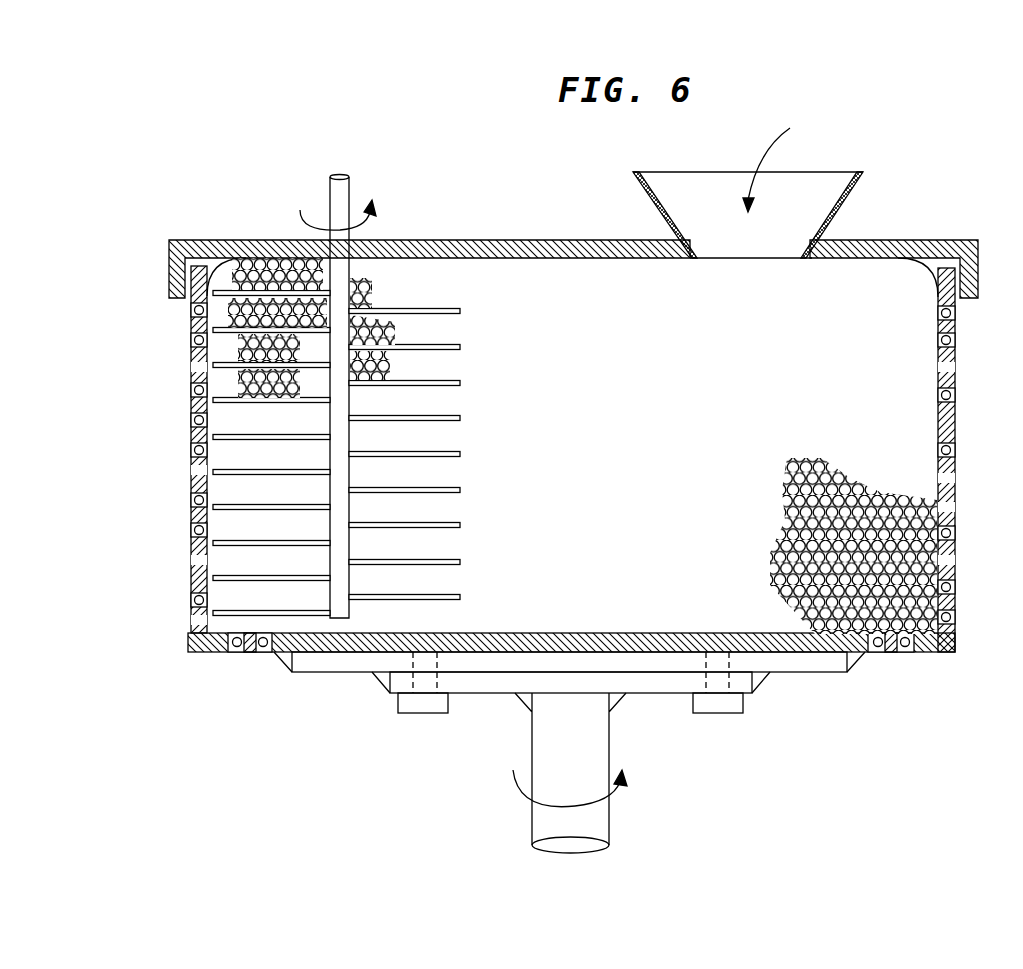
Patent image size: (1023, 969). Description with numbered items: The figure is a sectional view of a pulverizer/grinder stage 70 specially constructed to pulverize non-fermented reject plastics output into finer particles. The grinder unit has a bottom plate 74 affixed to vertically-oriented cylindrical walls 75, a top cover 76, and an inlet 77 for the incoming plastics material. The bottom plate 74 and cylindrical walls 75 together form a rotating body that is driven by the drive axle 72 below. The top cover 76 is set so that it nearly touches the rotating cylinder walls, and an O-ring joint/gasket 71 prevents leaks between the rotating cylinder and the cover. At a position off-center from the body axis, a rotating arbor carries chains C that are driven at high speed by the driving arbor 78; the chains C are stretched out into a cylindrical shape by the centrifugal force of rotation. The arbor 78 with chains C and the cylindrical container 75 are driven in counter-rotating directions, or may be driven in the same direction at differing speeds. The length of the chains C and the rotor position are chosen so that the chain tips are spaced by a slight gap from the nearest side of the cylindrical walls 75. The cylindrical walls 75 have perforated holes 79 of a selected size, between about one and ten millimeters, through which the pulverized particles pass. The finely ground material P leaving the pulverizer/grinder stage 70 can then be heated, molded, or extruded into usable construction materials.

The pulverizer/grinder stage 70 is at (559, 490).
The O-ring joint/gasket 71 is at (932, 282).
The drive axle 72 is at (600, 817).
The bottom plate 74 is at (586, 633).
The cylindrical walls 75 is at (170, 549).
The top cover 76 is at (520, 240).
The inlet 77 is at (832, 196).
The driving arbor 78 is at (350, 190).
The perforated holes 79 is at (191, 420).
The chains C is at (461, 383).
The finely ground material P is at (772, 553).